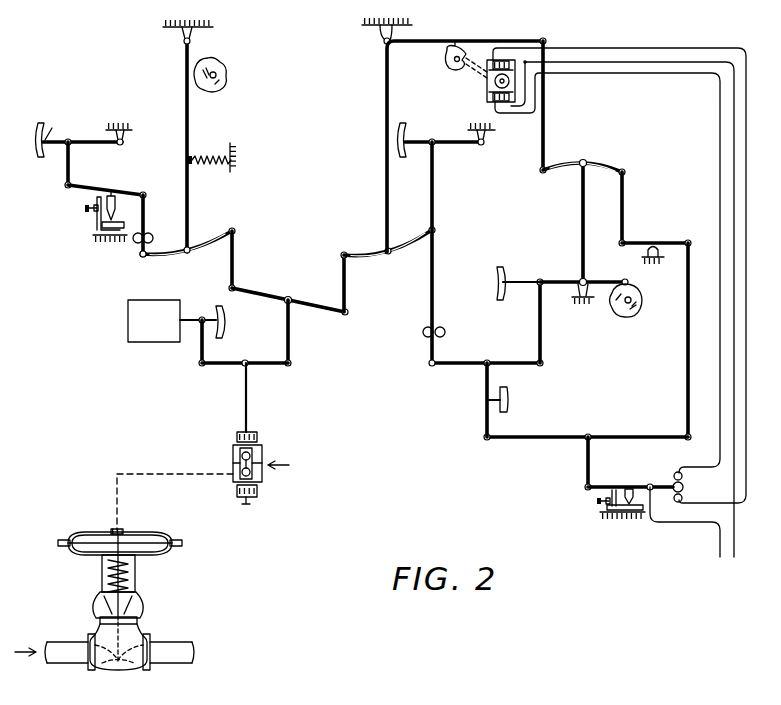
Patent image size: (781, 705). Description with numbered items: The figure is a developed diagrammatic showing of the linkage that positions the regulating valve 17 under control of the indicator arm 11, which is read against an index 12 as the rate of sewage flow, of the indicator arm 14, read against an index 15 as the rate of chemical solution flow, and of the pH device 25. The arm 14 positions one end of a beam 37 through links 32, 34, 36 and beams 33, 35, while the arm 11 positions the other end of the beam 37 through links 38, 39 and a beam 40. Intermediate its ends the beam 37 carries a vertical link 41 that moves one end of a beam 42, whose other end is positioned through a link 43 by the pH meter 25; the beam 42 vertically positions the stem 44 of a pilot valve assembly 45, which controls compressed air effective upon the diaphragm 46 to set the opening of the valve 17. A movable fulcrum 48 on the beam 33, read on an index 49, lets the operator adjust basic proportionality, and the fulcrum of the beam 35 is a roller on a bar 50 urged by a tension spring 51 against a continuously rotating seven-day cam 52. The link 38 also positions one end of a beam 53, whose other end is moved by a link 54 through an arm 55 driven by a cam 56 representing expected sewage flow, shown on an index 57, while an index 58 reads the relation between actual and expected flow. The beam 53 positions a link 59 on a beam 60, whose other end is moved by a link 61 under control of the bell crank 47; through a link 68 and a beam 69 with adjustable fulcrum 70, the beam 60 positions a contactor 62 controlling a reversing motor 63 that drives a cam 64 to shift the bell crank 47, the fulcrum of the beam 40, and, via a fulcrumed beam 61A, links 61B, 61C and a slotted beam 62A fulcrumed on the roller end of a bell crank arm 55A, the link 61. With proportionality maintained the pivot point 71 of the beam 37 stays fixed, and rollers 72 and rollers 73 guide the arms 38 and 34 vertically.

The indicator arm 11 is at (453, 144).
The index 12 is at (412, 140).
The indicator arm 14 is at (80, 140).
The index 15 is at (62, 126).
The regulating valve 17 is at (115, 672).
The pH device 25 is at (128, 330).
The link 32 is at (72, 170).
The beam 33 is at (143, 190).
The link 34 is at (146, 226).
The beam 35 is at (168, 258).
The link 36 is at (236, 268).
The beam 37 is at (250, 300).
The link 38 is at (436, 200).
The link 39 is at (348, 260).
The beam 40 is at (415, 246).
The vertical link 41 is at (292, 336).
The beam 42 is at (268, 367).
The link 43 is at (204, 350).
The stem 44 is at (246, 412).
The pilot valve assembly 45 is at (262, 448).
The diaphragm 46 is at (128, 532).
The bell crank 47 is at (385, 103).
The movable fulcrum 48 is at (114, 207).
The index 49 is at (117, 222).
The bar 50 is at (190, 198).
The tension spring 51 is at (215, 157).
The cam 52 is at (228, 80).
The beam 53 is at (465, 368).
The link 54 is at (542, 336).
The arm 55 is at (526, 282).
The bell crank arm 55A is at (581, 205).
The cam 56 is at (624, 318).
The index 57 is at (497, 276).
The index 58 is at (507, 396).
The link 59 is at (485, 412).
The beam 60 is at (520, 439).
The link 61 is at (688, 362).
The fulcrumed beam 61A is at (642, 243).
The link 61B is at (626, 210).
The link 61C is at (546, 124).
The contactor 62 is at (619, 313).
The slotted beam 62A is at (558, 162).
The reversing motor 63 is at (487, 92).
The cam 64 is at (446, 62).
The link 68 is at (586, 462).
The beam 69 is at (600, 486).
The adjustable fulcrum 70 is at (600, 512).
The pivot point 71 is at (290, 296).
The rollers 72 is at (443, 328).
The rollers 73 is at (134, 242).